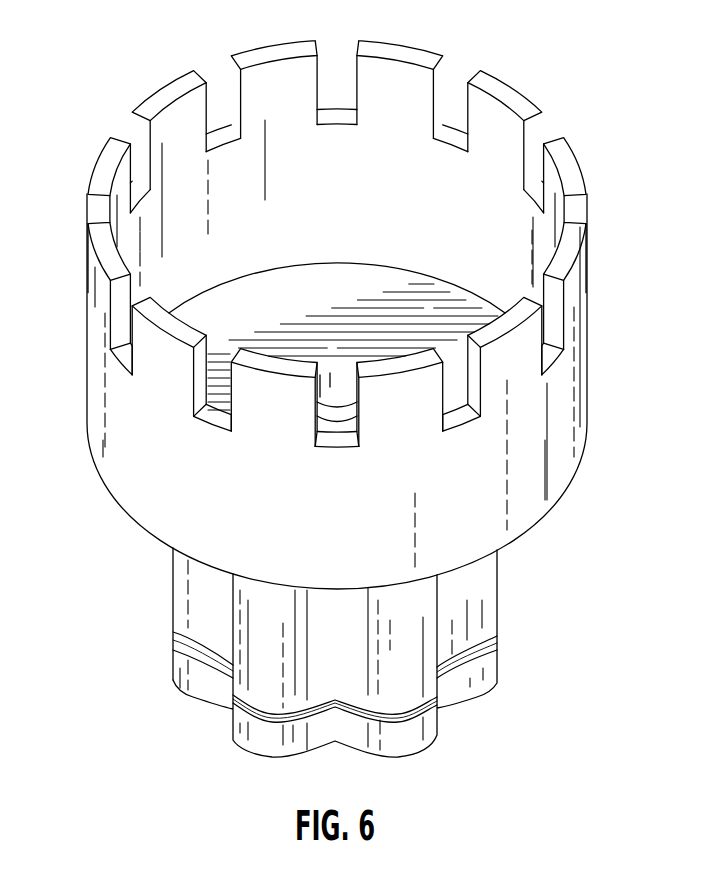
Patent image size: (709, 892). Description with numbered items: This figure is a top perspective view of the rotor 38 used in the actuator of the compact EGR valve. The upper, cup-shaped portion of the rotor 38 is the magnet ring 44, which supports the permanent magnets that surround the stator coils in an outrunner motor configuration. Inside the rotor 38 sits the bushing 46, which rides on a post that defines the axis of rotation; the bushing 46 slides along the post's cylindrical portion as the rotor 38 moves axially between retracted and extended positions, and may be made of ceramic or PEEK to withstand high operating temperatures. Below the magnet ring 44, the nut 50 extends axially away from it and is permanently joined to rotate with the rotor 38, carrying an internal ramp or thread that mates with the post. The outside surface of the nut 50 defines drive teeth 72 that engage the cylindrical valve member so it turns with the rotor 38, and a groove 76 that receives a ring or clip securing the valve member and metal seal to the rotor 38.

The rotor 38 is at (143, 87).
The magnet ring 44 is at (582, 343).
The bushing 46 is at (338, 404).
The nut 50 is at (500, 593).
The drive teeth 72 is at (182, 595).
The groove 76 is at (497, 640).